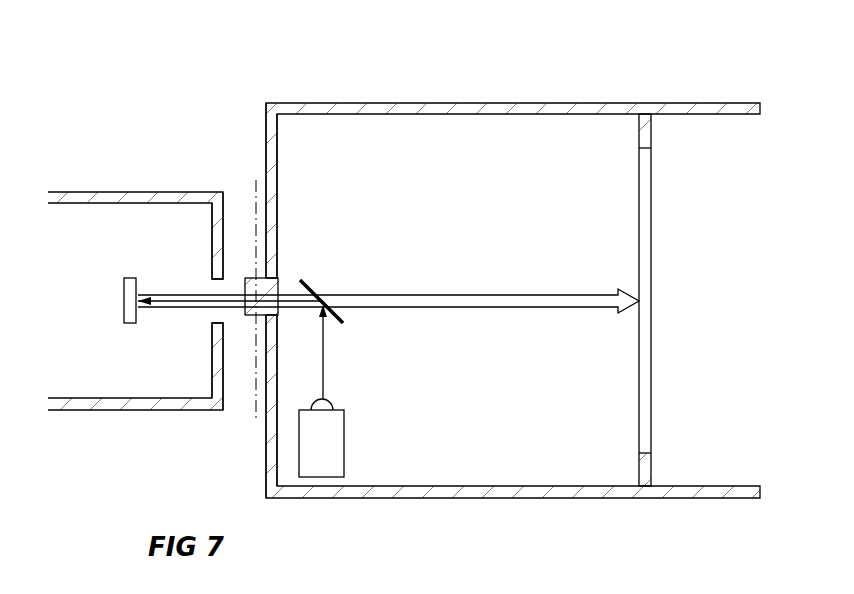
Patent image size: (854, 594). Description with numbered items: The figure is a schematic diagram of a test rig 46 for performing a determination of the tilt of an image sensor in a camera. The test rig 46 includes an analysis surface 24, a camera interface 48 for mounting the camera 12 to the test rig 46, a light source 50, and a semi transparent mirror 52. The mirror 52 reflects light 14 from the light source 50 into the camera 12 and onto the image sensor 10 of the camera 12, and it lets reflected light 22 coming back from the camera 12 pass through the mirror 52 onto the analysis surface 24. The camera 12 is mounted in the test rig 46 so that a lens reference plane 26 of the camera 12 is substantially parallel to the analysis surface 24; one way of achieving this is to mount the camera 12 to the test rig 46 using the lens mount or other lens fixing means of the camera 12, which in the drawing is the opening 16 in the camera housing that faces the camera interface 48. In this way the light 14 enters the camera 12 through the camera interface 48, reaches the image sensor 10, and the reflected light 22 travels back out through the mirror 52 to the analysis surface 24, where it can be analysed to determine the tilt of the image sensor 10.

The image sensor 10 is at (123, 288).
The camera 12 is at (135, 262).
The light 14 is at (323, 366).
The housing aperture 16 is at (210, 278).
The reflected light 22 is at (443, 304).
The analysis surface 24 is at (639, 368).
The lens reference plane 26 is at (257, 195).
The test rig 46 is at (508, 253).
The camera interface 48 is at (247, 318).
The light source 50 is at (333, 433).
The semi transparent mirror 52 is at (312, 283).